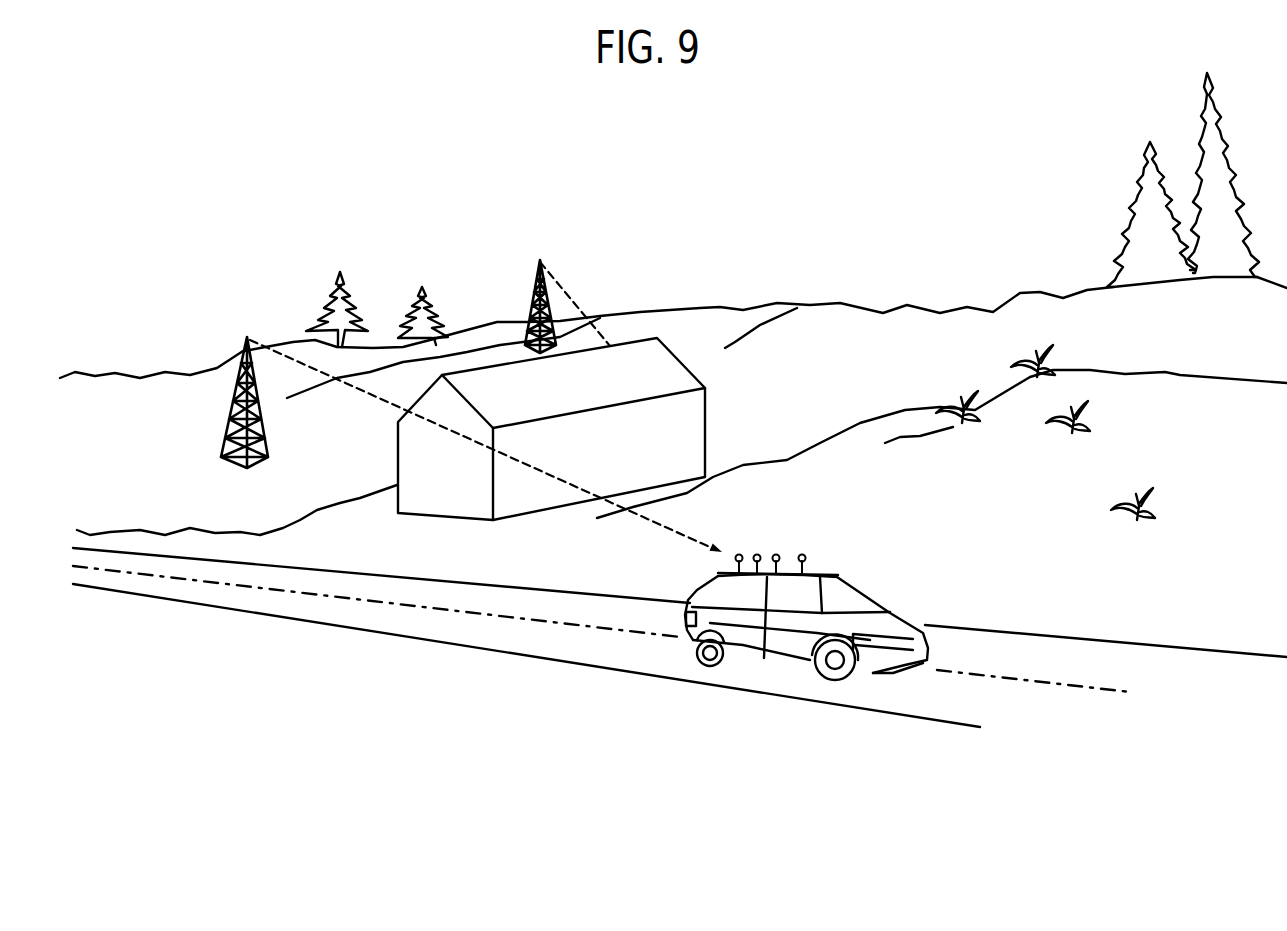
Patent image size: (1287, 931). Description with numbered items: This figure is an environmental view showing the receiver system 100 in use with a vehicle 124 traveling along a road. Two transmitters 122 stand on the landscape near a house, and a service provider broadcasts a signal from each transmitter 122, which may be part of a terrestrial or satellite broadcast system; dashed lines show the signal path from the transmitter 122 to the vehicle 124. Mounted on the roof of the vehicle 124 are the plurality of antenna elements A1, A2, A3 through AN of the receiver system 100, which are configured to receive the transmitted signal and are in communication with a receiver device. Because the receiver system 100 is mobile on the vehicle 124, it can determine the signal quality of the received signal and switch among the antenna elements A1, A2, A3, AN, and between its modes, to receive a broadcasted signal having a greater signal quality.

The transmitter 122 is at (243, 346).
The receiver system 100 is at (486, 415).
The vehicle 124 is at (893, 613).
The antenna element A1 is at (740, 552).
The antenna element A2 is at (758, 552).
The antenna element A3 is at (778, 553).
The antenna element AN is at (803, 553).